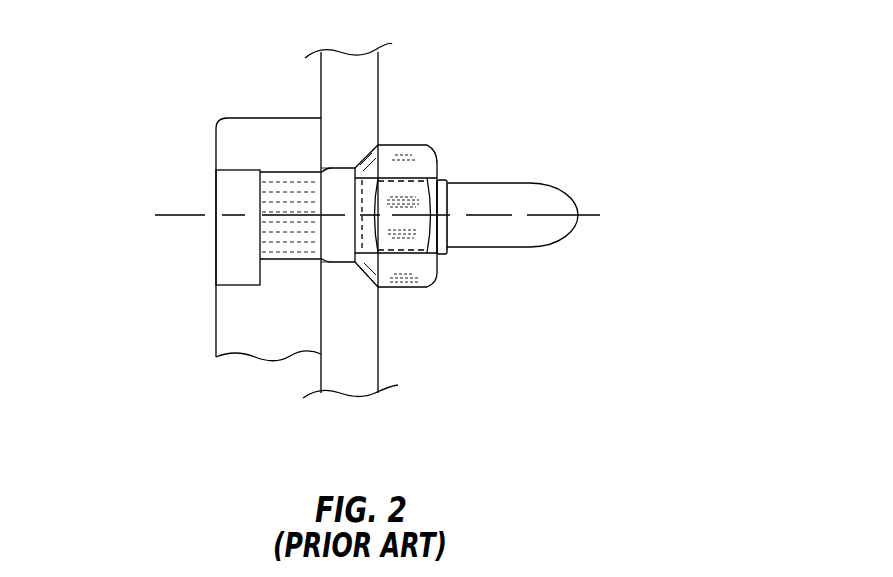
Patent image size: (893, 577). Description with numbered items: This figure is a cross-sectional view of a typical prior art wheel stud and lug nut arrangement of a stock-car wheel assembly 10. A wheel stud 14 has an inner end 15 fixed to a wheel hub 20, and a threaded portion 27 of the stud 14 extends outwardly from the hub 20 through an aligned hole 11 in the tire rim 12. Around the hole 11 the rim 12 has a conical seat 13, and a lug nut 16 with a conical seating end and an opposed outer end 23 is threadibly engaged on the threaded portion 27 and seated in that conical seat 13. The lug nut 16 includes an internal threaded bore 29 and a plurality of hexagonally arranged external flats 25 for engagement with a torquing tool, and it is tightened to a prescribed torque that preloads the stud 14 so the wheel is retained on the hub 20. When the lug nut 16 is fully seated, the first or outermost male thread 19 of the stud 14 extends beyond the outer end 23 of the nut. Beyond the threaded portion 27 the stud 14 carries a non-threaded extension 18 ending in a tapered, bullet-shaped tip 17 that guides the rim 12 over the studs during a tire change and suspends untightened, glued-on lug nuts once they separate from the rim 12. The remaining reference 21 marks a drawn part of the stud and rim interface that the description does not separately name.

The wheel assembly 10 is at (658, 65).
The hole 11 is at (335, 258).
The rim 12 is at (337, 82).
The conical seat 13 is at (373, 158).
The wheel stud 14 is at (549, 217).
The inner end 15 is at (230, 190).
The lug nut 16 is at (411, 178).
The tip 17 is at (572, 227).
The non-threaded extension 18 is at (528, 235).
The first male thread 19 is at (445, 252).
The wheel hub 20 is at (233, 322).
The sleeve 21 is at (366, 275).
The outer end 23 is at (440, 174).
The external flats 25 is at (390, 148).
The threaded portion 27 is at (448, 198).
The threaded bore 29 is at (438, 159).